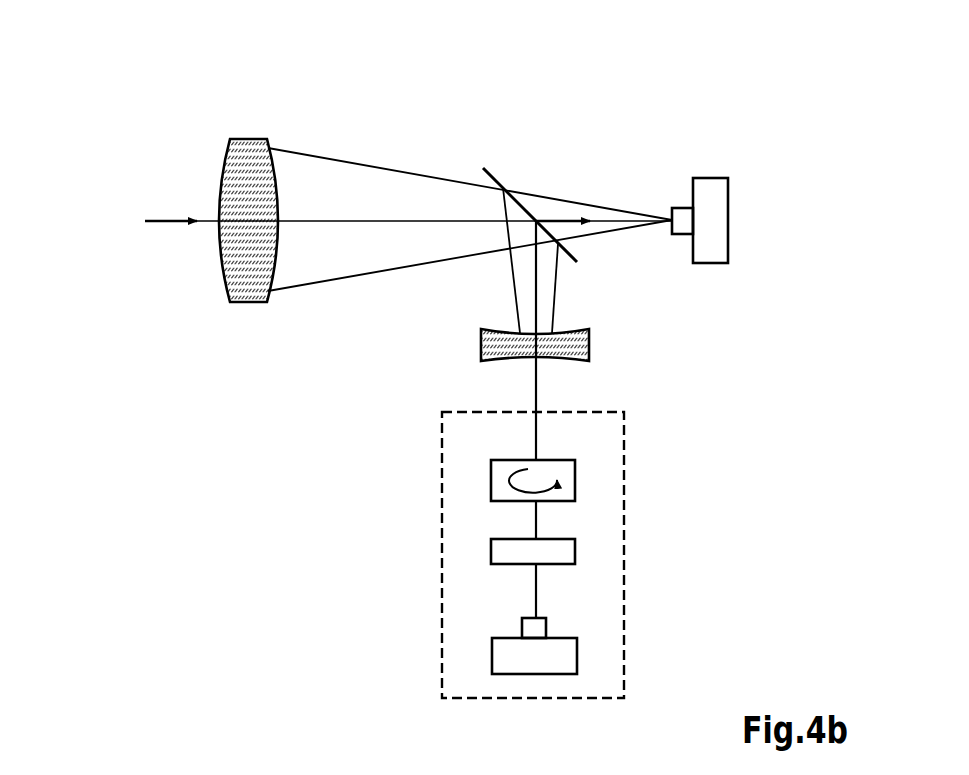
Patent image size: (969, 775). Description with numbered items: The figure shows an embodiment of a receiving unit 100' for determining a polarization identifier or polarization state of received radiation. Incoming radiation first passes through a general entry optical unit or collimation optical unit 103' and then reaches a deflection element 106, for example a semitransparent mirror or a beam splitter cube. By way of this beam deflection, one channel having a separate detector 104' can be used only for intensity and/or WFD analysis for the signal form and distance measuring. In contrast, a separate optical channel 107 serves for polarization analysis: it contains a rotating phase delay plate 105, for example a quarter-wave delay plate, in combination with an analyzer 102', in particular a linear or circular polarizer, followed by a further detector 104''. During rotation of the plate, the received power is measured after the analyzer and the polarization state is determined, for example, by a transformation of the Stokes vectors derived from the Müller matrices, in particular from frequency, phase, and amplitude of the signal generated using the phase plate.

The receiving unit 100' is at (108, 29).
The collimation optical unit 103' is at (315, 232).
The deflection element 106 is at (663, 135).
The detector 104' is at (762, 176).
The optical channel 107 is at (334, 551).
The rotating phase delay plate 105 is at (667, 424).
The analyzer 102' is at (671, 511).
The further detector 104'' is at (677, 613).